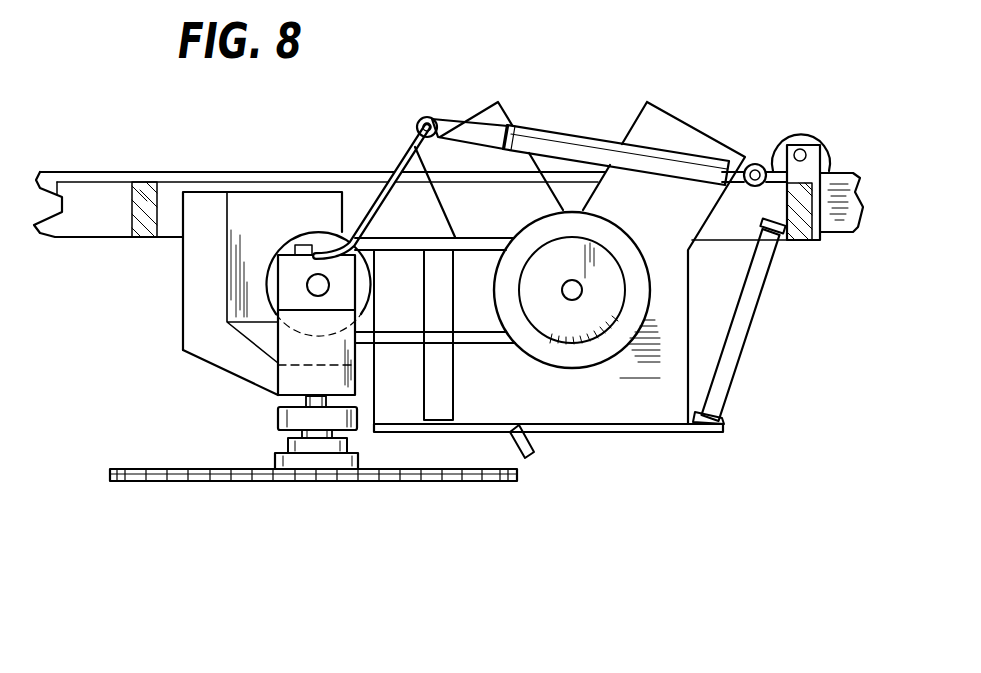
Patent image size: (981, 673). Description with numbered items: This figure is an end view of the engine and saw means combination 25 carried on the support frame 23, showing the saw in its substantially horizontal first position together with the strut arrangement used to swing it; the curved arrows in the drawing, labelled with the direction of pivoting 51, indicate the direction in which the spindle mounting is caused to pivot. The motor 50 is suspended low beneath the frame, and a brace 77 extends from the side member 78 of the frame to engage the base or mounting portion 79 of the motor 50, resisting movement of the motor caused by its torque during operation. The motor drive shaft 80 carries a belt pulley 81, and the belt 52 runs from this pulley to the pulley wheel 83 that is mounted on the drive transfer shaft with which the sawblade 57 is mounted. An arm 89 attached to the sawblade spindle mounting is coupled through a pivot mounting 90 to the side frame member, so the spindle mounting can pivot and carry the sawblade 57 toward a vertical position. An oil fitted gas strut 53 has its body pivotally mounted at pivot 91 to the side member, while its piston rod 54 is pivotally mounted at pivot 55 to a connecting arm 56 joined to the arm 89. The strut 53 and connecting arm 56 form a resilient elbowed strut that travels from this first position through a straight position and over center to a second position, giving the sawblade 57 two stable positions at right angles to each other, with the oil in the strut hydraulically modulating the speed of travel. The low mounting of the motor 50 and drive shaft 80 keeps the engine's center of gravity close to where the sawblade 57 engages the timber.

The support frame 23 is at (94, 167).
The engine and saw means combination 25 is at (797, 258).
The motor 50 is at (709, 125).
The pivot bracket 51 is at (260, 420).
The belt 52 is at (478, 338).
The oil fitted gas strut 53 is at (594, 150).
The piston rod 54 is at (478, 128).
The pivot 55 is at (427, 118).
The connecting arm 56 is at (391, 163).
The sawblade 57 is at (498, 482).
The brace 77 is at (737, 382).
The side member 78 is at (822, 250).
The base or mounting portion 79 is at (705, 434).
The motor drive shaft 80 is at (582, 292).
The belt pulley 81 is at (603, 308).
The pulley wheel 83 is at (317, 232).
The arm 89 is at (285, 268).
The pivot mounting 90 is at (306, 285).
The pivot 91 is at (755, 165).